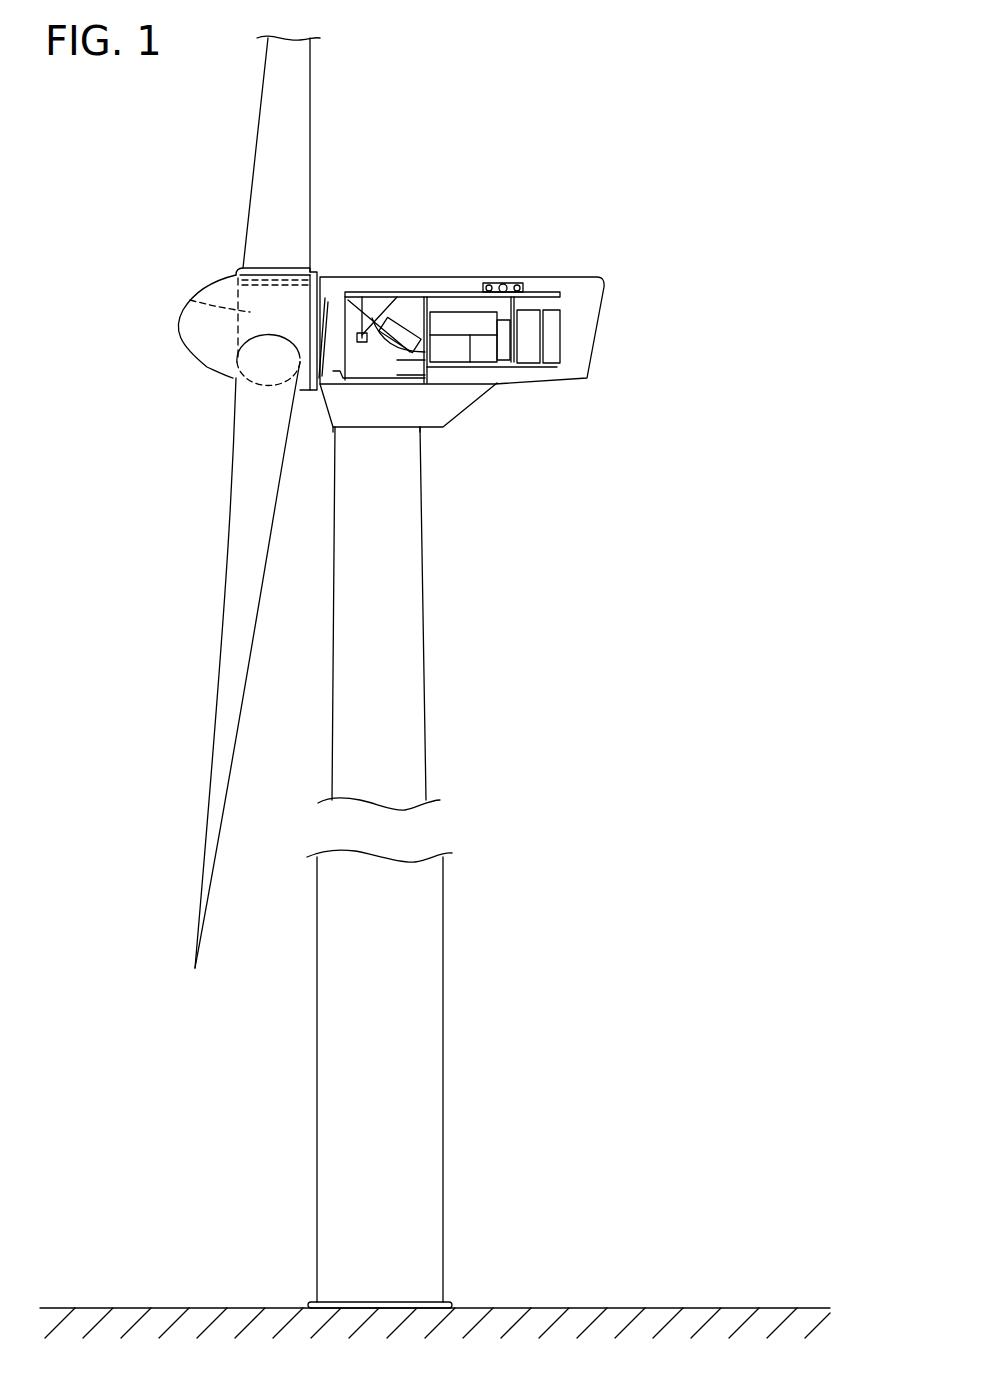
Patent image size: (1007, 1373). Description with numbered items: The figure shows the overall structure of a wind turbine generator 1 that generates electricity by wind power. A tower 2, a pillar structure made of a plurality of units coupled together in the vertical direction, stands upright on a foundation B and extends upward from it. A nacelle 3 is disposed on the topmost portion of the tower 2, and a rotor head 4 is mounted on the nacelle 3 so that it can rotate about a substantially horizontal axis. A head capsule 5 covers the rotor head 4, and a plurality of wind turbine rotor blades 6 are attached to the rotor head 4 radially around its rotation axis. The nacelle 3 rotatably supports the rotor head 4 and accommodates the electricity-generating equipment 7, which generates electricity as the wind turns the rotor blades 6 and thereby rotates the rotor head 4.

The wind turbine generator 1 is at (612, 125).
The tower 2 is at (438, 1000).
The nacelle 3 is at (618, 322).
The rotor head 4 is at (250, 312).
The head capsule 5 is at (200, 348).
The wind turbine rotor blades 6 is at (260, 120).
The electricity-generating equipment 7 is at (469, 285).
The foundation B is at (308, 1306).